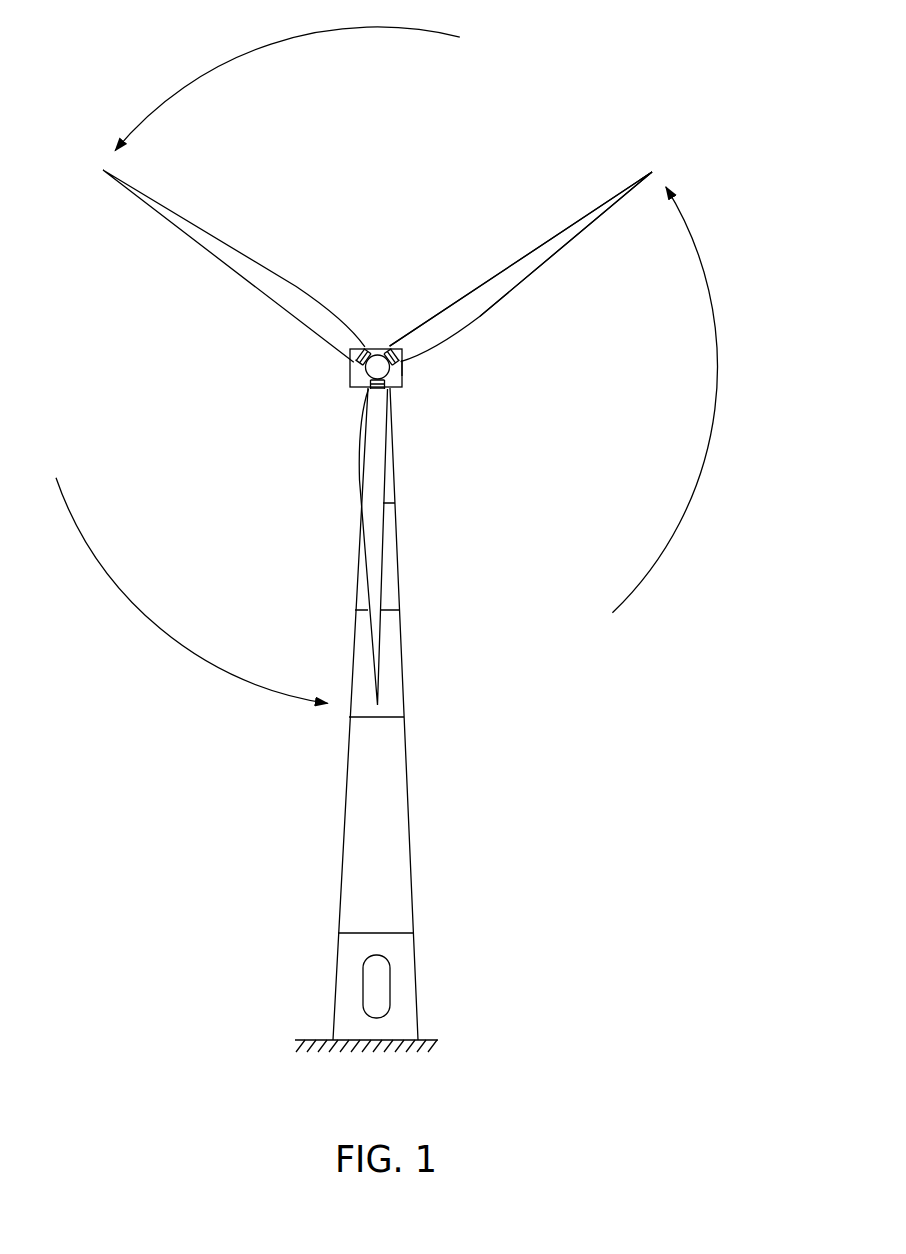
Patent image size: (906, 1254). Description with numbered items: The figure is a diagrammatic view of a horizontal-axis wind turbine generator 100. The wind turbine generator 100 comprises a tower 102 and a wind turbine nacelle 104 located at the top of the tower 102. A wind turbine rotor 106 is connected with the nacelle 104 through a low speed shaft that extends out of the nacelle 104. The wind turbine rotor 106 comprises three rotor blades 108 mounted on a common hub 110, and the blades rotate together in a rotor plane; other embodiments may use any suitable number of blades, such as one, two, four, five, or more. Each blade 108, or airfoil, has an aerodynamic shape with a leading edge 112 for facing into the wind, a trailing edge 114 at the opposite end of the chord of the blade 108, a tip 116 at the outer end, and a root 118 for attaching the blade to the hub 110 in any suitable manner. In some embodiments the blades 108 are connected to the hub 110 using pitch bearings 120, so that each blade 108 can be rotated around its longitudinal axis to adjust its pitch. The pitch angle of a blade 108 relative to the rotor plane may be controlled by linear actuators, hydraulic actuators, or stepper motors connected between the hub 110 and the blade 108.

The wind turbine generator 100 is at (327, 888).
The tower 102 is at (402, 783).
The wind turbine nacelle 104 is at (403, 384).
The wind turbine rotor 106 is at (323, 367).
The rotor blade 108 is at (231, 256).
The hub 110 is at (377, 356).
The leading edge 112 is at (549, 240).
The trailing edge 114 is at (540, 266).
The tip 116 is at (660, 160).
The root 118 is at (415, 366).
The pitch bearing 120 is at (397, 349).